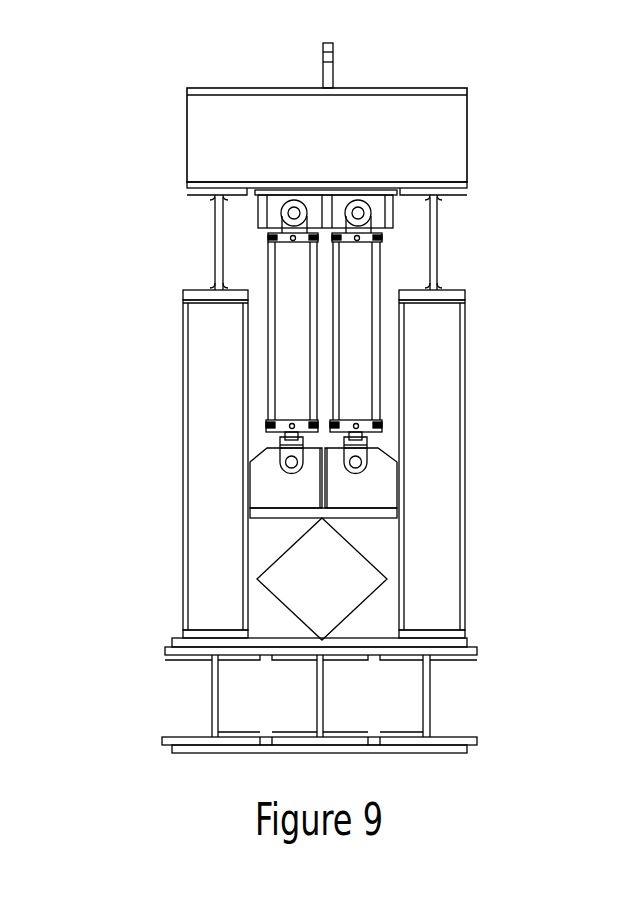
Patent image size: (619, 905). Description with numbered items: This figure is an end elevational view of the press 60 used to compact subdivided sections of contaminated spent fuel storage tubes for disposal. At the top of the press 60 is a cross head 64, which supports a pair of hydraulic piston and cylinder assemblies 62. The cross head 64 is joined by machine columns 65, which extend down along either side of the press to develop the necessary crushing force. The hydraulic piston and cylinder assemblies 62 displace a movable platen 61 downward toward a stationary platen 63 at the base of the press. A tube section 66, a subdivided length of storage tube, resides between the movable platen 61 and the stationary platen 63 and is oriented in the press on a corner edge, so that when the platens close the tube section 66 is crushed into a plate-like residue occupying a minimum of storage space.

The press 60 is at (163, 651).
The movable platen 61 is at (368, 492).
The hydraulic piston and cylinder assemblies 62 is at (293, 333).
The stationary platen 63 is at (370, 640).
The cross head 64 is at (467, 140).
The machine columns 65 is at (183, 467).
The tube section 66 is at (375, 570).